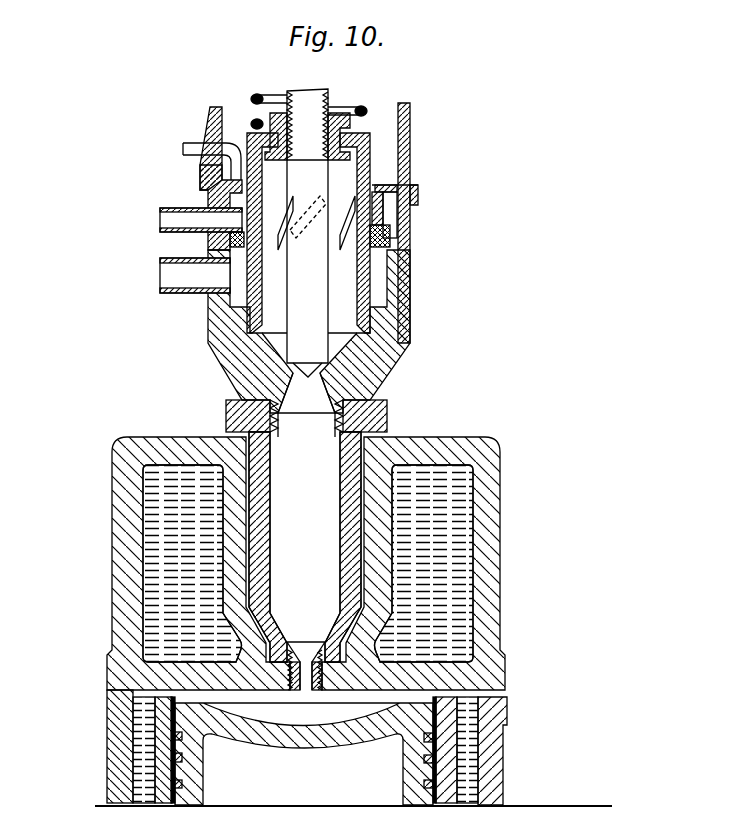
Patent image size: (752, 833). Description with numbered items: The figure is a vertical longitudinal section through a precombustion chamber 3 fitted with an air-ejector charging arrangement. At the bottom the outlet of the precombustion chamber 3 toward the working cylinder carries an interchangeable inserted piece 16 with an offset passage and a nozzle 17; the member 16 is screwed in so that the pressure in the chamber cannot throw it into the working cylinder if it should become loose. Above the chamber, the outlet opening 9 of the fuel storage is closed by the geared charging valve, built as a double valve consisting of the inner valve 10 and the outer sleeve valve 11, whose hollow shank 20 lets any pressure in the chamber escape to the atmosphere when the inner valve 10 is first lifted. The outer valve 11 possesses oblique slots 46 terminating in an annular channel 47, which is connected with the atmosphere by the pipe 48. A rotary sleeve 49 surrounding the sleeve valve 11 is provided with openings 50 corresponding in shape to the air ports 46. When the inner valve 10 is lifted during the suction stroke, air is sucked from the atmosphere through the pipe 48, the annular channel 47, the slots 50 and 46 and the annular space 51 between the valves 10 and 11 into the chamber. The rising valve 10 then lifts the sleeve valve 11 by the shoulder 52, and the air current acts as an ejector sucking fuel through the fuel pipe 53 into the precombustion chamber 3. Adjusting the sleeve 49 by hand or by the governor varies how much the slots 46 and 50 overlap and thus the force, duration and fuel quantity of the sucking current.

The hollow shank 20 is at (212, 107).
The shoulder 52 is at (350, 160).
The rotary sleeve 49 is at (212, 203).
The pipe 48 is at (180, 220).
The openings 50 is at (222, 232).
The annular channel 47 is at (228, 240).
The oblique slots 46 is at (220, 268).
The fuel pipe 53 is at (232, 262).
The outer valve 11 is at (340, 317).
The annular space 51 is at (343, 328).
The inner valve 10 is at (313, 349).
The outlet opening 9 is at (340, 372).
The precombustion chamber 3 is at (298, 462).
The inserted piece 16 is at (288, 660).
The nozzle 17 is at (303, 671).